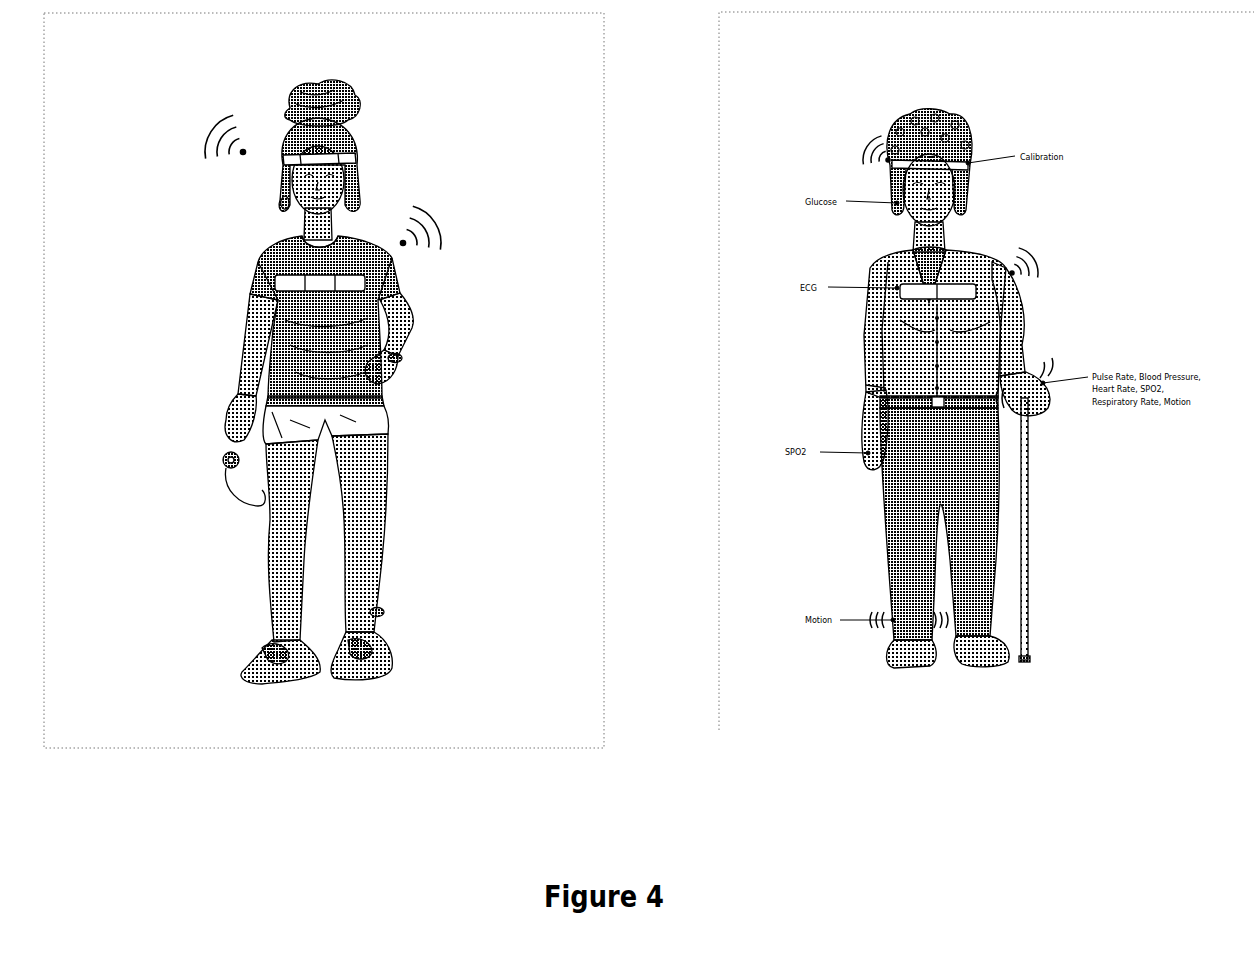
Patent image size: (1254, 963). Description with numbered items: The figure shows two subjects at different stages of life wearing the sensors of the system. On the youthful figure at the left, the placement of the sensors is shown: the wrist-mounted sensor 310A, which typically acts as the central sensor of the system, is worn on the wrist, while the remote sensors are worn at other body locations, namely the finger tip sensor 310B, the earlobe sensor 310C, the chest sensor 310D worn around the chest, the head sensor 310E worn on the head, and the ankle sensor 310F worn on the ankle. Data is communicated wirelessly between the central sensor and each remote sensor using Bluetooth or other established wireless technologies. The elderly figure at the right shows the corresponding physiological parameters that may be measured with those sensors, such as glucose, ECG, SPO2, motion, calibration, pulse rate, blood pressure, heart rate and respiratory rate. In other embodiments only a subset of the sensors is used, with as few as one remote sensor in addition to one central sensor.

The wrist-mounted sensor 310A is at (397, 362).
The finger tip sensor 310B is at (222, 466).
The earlobe sensor 310C is at (272, 205).
The chest sensor 310D is at (272, 283).
The head sensor 310E is at (352, 157).
The ankle sensor 310F is at (382, 611).